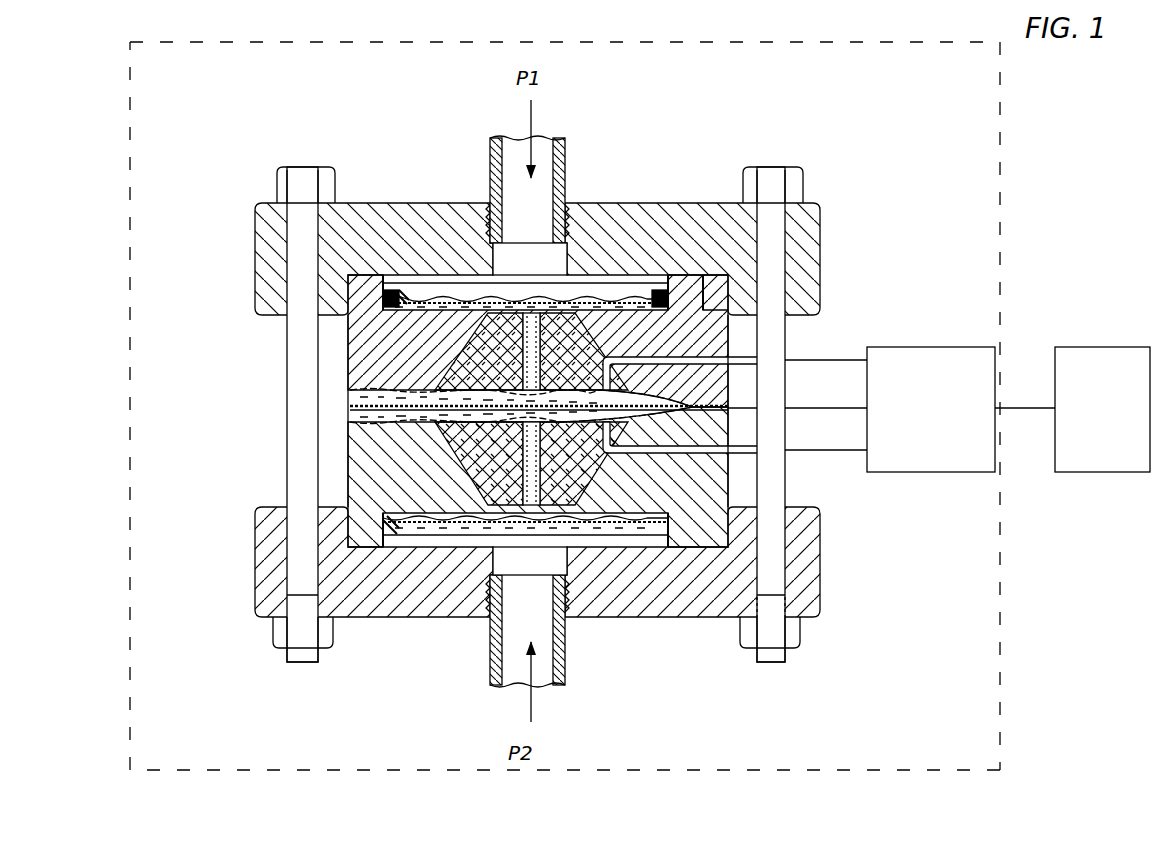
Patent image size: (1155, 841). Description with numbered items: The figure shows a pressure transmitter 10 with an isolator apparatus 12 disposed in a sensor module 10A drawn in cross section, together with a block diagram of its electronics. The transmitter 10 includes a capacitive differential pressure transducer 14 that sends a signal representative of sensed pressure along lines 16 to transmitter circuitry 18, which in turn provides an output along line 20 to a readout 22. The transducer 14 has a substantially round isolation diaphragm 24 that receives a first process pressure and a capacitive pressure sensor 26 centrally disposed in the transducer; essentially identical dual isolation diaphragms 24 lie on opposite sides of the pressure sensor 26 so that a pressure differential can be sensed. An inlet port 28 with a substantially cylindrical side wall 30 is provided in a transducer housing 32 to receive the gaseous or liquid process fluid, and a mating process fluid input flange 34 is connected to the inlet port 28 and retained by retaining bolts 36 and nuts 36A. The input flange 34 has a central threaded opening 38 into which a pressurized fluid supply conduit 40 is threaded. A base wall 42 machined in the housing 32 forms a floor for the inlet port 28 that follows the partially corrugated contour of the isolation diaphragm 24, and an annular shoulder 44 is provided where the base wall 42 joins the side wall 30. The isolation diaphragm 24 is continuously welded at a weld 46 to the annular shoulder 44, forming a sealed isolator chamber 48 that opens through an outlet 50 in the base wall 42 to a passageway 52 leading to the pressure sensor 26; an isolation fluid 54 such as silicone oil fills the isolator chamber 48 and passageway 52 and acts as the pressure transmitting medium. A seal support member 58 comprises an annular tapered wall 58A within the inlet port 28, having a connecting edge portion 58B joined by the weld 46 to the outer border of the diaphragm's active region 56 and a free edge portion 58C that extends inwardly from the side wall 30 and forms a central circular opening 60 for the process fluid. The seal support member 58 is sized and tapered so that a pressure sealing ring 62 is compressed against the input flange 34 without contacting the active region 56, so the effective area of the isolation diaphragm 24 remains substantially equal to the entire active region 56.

The pressure transmitter 10 is at (1013, 723).
The sensor module 10A is at (786, 156).
The isolator apparatus 12 is at (712, 246).
The differential pressure transducer 14 is at (742, 483).
The lines 16 is at (816, 448).
The transmitter circuitry 18 is at (966, 473).
The line 20 is at (1032, 409).
The readout 22 is at (1142, 473).
The isolation diaphragm 24 is at (407, 284).
The pressure sensor 26 is at (378, 430).
The inlet port 28 is at (420, 284).
The side wall 30 is at (731, 302).
The transducer housing 32 is at (736, 292).
The process fluid input flange 34 is at (344, 206).
The retaining bolts 36 is at (278, 176).
The nuts 36A is at (288, 650).
The central threaded opening 38 is at (468, 205).
The pressurized fluid supply conduit 40 is at (576, 282).
The base wall 42 is at (736, 316).
The annular shoulder 44 is at (702, 319).
The weld 46 is at (716, 307).
The isolator chamber 48 is at (522, 310).
The outlet 50 is at (518, 360).
The passageway 52 is at (520, 380).
The isolation fluid 54 is at (430, 392).
The active region 56 is at (452, 294).
The seal support member 58 is at (684, 304).
The tapered wall 58A is at (400, 290).
The connecting edge portion 58B is at (383, 303).
The free edge portion 58C is at (397, 275).
The central circular opening 60 is at (647, 290).
The pressure sealing ring 62 is at (693, 298).